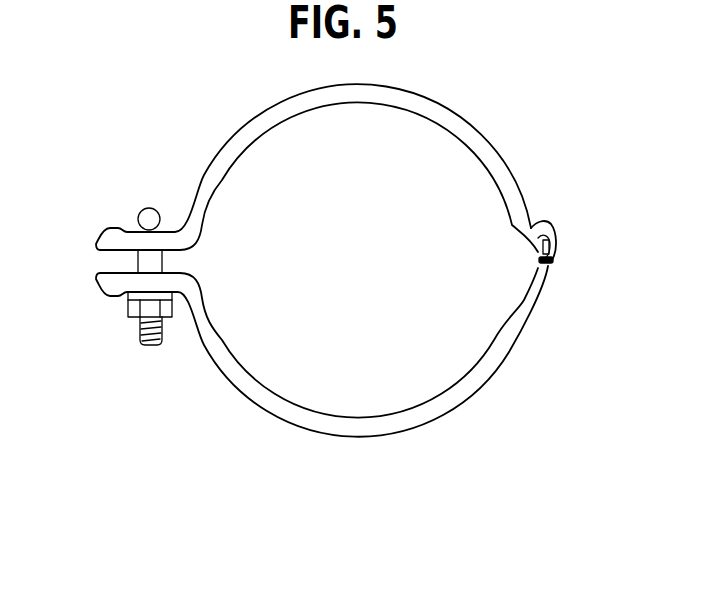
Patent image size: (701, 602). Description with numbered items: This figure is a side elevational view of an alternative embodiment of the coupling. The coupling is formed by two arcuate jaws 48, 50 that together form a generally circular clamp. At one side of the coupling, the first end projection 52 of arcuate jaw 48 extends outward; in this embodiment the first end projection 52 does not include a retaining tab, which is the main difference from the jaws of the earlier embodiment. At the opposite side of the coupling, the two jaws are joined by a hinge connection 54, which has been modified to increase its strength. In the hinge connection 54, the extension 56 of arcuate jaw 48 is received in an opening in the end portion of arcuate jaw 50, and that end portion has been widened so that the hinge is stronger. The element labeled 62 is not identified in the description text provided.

The arcuate jaw 48 is at (397, 104).
The arcuate jaw 50 is at (393, 412).
The first end projection 52 is at (128, 231).
The hinge connection 54 is at (557, 266).
The extension 56 is at (551, 234).
The nut 62 is at (124, 296).